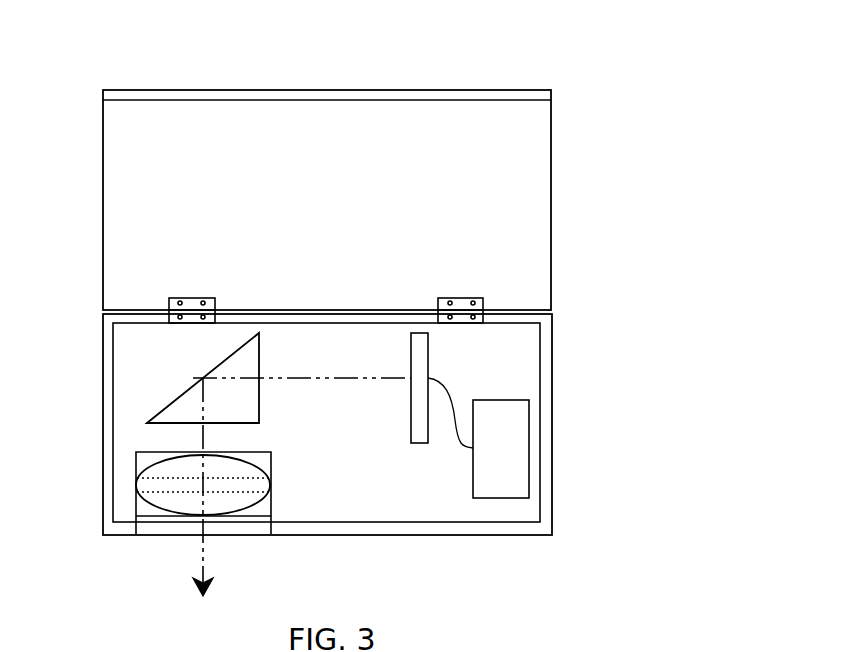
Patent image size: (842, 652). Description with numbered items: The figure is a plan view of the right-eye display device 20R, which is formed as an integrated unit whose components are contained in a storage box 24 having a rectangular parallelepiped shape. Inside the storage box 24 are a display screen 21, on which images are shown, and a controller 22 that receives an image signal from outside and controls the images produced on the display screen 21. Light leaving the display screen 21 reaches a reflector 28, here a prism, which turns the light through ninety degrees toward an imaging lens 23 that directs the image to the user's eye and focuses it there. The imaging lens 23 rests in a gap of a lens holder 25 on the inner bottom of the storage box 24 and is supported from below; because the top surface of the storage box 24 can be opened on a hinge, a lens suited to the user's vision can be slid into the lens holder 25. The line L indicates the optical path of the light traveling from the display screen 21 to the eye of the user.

The right-eye display device 20R is at (575, 88).
The storage box 24 is at (543, 343).
The reflector 28 is at (168, 403).
The lens holder 25 is at (134, 458).
The imaging lens 23 is at (137, 497).
The display screen 21 is at (418, 443).
The controller 22 is at (498, 498).
The line L is at (203, 552).